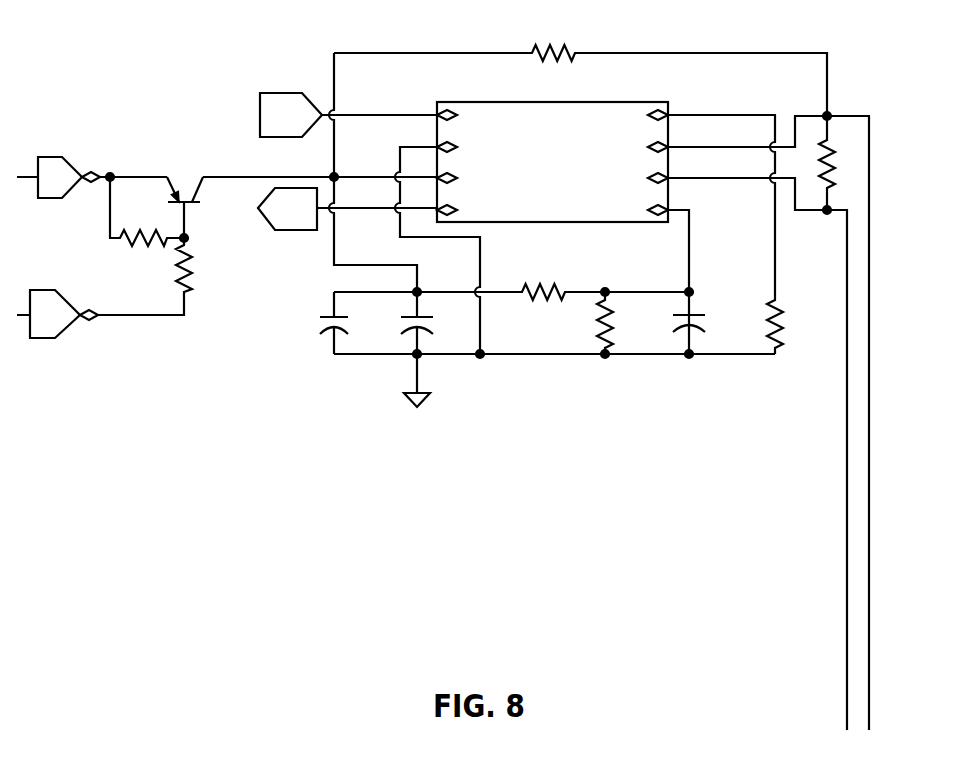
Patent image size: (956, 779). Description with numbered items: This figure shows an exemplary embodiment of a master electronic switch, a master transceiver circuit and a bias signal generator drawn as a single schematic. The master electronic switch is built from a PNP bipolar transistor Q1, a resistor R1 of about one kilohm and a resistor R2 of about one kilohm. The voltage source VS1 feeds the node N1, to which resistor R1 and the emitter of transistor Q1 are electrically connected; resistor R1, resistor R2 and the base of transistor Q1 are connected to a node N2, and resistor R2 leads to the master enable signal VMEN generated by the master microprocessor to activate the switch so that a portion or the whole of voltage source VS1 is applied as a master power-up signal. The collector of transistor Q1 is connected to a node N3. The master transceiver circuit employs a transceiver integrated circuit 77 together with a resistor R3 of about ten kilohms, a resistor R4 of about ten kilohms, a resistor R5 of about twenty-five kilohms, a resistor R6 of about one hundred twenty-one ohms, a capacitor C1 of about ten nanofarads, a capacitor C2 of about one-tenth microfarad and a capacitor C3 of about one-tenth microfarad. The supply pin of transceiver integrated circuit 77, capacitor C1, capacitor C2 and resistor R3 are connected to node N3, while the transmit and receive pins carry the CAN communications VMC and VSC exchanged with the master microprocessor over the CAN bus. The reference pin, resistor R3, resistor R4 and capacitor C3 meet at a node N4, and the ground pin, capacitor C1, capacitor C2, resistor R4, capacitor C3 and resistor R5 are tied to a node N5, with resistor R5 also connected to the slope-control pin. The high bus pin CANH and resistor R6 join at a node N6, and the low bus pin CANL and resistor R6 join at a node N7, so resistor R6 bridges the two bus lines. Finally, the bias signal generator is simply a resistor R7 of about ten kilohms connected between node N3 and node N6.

The transceiver integrated circuit 77 is at (543, 181).
The PNP bipolar transistor Q1 is at (250, 203).
The resistor R1 is at (147, 211).
The resistor R2 is at (160, 276).
The resistor R3 is at (511, 285).
The resistor R4 is at (618, 323).
The resistor R5 is at (738, 234).
The resistor R6 is at (815, 163).
The resistor R7 is at (580, 72).
The capacitor C1 is at (322, 323).
The capacitor C2 is at (405, 323).
The capacitor C3 is at (701, 324).
The node N1 is at (116, 167).
The node N2 is at (199, 236).
The node N3 is at (381, 226).
The node N4 is at (605, 284).
The node N5 is at (480, 365).
The node N6 is at (816, 108).
The node N7 is at (818, 220).
The voltage source VS1 is at (92, 177).
The master enable signal VMEN is at (57, 314).
The CAN communication VMC is at (348, 115).
The CAN communication VSC is at (347, 209).
The CANL pin CANL is at (838, 416).
The CANH pin CANH is at (877, 416).